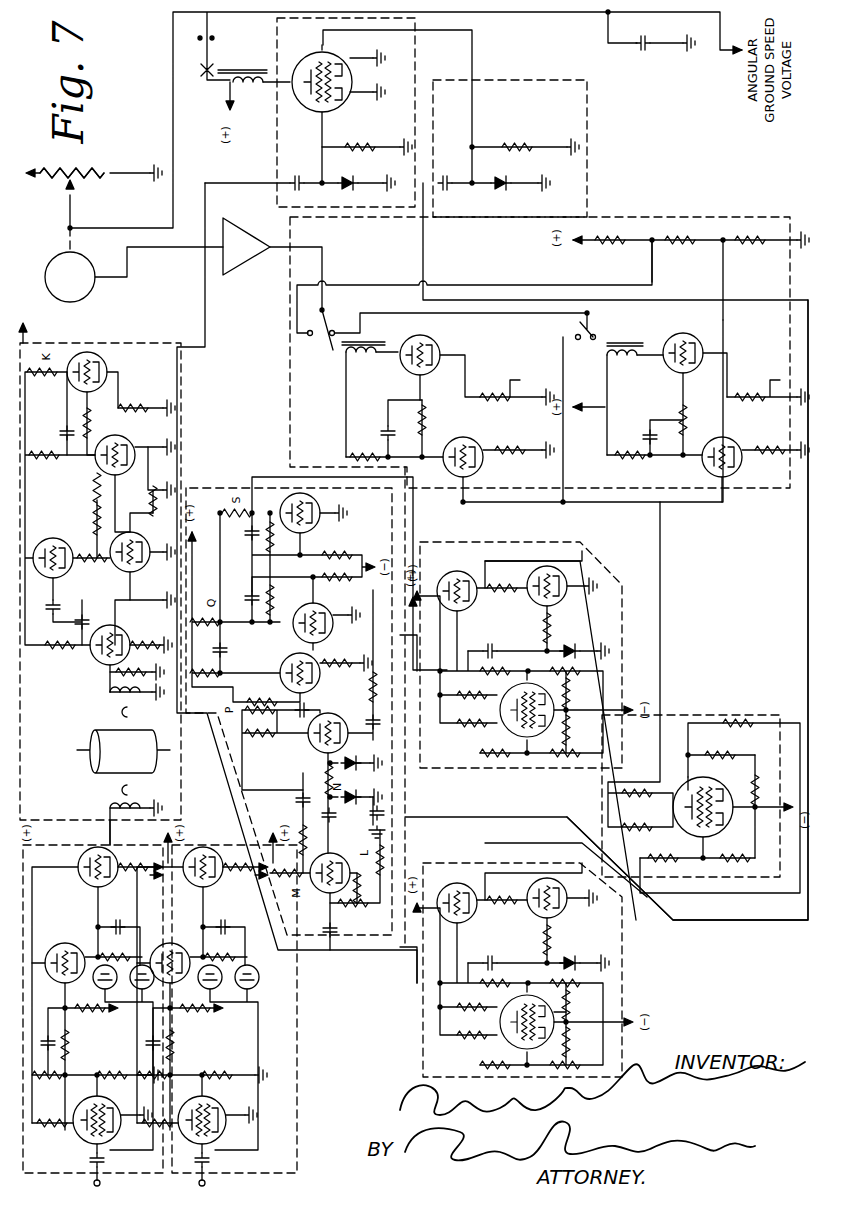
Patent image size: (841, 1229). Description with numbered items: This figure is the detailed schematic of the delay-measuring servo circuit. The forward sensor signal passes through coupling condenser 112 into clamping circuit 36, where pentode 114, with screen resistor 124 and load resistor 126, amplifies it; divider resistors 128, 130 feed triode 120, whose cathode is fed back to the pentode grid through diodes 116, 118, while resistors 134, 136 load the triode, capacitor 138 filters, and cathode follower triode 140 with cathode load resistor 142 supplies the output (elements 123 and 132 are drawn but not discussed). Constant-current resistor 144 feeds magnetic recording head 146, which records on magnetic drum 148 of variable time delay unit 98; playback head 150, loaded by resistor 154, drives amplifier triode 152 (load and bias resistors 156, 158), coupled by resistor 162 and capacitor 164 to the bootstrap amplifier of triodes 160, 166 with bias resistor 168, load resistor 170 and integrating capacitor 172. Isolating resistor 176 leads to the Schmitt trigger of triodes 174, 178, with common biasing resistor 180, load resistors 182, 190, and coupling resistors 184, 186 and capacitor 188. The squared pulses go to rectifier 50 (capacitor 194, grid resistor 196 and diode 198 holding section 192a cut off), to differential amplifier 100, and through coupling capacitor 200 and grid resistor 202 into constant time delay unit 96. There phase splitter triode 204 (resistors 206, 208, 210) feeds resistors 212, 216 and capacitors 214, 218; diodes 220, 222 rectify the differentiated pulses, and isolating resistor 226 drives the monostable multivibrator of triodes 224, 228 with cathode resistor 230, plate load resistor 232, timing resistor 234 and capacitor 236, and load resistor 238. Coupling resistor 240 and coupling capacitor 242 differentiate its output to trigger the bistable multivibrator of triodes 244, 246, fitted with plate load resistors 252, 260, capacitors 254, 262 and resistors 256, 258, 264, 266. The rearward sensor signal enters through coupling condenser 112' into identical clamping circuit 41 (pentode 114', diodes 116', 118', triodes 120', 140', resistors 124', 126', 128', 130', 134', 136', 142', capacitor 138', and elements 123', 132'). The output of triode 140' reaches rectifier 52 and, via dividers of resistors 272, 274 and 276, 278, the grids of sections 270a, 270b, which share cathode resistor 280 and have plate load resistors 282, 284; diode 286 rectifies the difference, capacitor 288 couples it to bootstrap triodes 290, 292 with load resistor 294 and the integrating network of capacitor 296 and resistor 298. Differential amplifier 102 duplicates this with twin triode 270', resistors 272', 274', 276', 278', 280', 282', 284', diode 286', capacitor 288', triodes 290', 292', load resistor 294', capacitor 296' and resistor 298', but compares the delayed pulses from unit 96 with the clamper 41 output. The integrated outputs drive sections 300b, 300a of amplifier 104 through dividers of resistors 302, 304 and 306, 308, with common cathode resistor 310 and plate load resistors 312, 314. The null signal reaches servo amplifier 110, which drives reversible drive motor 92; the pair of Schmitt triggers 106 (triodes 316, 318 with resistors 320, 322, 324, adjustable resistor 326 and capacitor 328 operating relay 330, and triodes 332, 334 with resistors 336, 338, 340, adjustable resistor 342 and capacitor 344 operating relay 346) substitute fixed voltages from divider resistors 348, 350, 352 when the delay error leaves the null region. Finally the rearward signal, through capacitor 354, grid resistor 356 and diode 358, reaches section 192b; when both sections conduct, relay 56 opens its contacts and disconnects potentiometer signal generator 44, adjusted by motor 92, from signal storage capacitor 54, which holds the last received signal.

The clamping circuit 36 is at (93, 999).
The clamping circuit 41 is at (206, 845).
The signal generator 44 is at (72, 187).
The rectifier 50 is at (277, 118).
The rectifier 52 is at (545, 80).
The signal storage capacitor 54 is at (645, 52).
The relay 56 is at (250, 88).
The reversible drive motor 92 is at (48, 283).
The constant time delay unit 96 is at (205, 488).
The variable time delay unit 98 is at (126, 343).
The differential amplifier 100 is at (625, 945).
The differential amplifier 102 is at (612, 620).
The amplifier 104 is at (690, 715).
The pair of Schmitt triggers 106 is at (688, 217).
The servo amplifier 110 is at (238, 268).
The coupling condenser 112 is at (121, 1137).
The pentode 114 is at (91, 1130).
The diode 116 is at (98, 981).
The diode 118 is at (143, 961).
The triode 120 is at (58, 947).
The resistor 123 is at (47, 1091).
The resistor 124 is at (129, 1065).
The resistor 126 is at (52, 1141).
The resistor 128 is at (73, 1047).
The resistor 130 is at (91, 1022).
The capacitor 132 is at (45, 1015).
The resistor 134 is at (104, 942).
The resistor 136 is at (127, 911).
The capacitor 138 is at (140, 882).
The triode 140 is at (89, 874).
The resistor 142 is at (155, 896).
The coupling condenser 112' is at (237, 1137).
The pentode 114' is at (202, 1130).
The diode 116' is at (215, 982).
The diode 118' is at (264, 960).
The triode 120' is at (164, 950).
The resistor 123' is at (165, 1091).
The resistor 124' is at (234, 1064).
The resistor 126' is at (165, 1142).
The resistor 128' is at (196, 1047).
The resistor 130' is at (206, 1023).
The capacitor 132' is at (167, 1014).
The resistor 134' is at (220, 941).
The resistor 136' is at (277, 971).
The capacitor 138' is at (245, 891).
The triode 140' is at (203, 879).
The resistor 142' is at (245, 850).
The resistor 144 is at (108, 822).
The magnetic recording head 146 is at (148, 803).
The magnetic drum 148 is at (90, 738).
The magnetic playback head 150 is at (110, 700).
The triode 152 is at (100, 655).
The resistor 154 is at (137, 665).
The resistor 156 is at (50, 650).
The resistor 158 is at (151, 631).
The triode 160 is at (119, 608).
The coupling resistor 162 is at (152, 589).
The coupling capacitor 164 is at (75, 622).
The triode 166 is at (48, 540).
The resistor 168 is at (142, 538).
The resistor 170 is at (92, 572).
The capacitor 172 is at (59, 601).
The triode 174 is at (96, 513).
The isolating resistor 176 is at (80, 515).
The triode 178 is at (89, 352).
The biasing resistor 180 is at (158, 481).
The resistor 182 is at (44, 462).
The resistor 184 is at (133, 405).
The resistor 186 is at (96, 423).
The capacitor 188 is at (60, 433).
The resistor 190 is at (62, 420).
The twin triode section 192a is at (310, 110).
The twin triode section 192b is at (304, 62).
The capacitor 194 is at (300, 178).
The grid resistor 196 is at (360, 145).
The semiconductor diode 198 is at (345, 180).
The coupling capacitor 200 is at (322, 930).
The grid resistor 202 is at (360, 888).
The triode 204 is at (333, 901).
The resistor 206 is at (359, 868).
The resistor 208 is at (291, 841).
The resistor 210 is at (388, 860).
The resistor 212 is at (296, 823).
The capacitor 214 is at (329, 749).
The resistor 216 is at (296, 850).
The capacitor 218 is at (336, 823).
The semiconductor diode 220 is at (353, 758).
The semiconductor diode 222 is at (370, 819).
The triode 224 is at (312, 740).
The isolating resistor 226 is at (319, 780).
The triode 228 is at (290, 667).
The cathode resistor 230 is at (347, 653).
The resistor 232 is at (252, 740).
The resistor 234 is at (281, 748).
The capacitor 236 is at (291, 715).
The load resistor 238 is at (205, 659).
The coupling resistor 240 is at (203, 615).
The coupling capacitor 242 is at (228, 652).
The triode 244 is at (318, 623).
The triode 246 is at (292, 500).
The plate load resistor 252 is at (239, 589).
The capacitor 254 is at (247, 581).
The resistor 256 is at (277, 600).
The resistor 258 is at (350, 585).
The plate load resistor 260 is at (228, 513).
The capacitor 262 is at (242, 537).
The resistor 264 is at (278, 539).
The resistor 266 is at (345, 553).
The twin triode section 270a is at (536, 1026).
The twin triode section 270b is at (563, 1003).
The twin triode 270' is at (543, 707).
The resistor 272 is at (495, 1055).
The resistor 274 is at (571, 1053).
The resistor 276 is at (495, 949).
The resistor 278 is at (549, 991).
The resistor 280 is at (579, 1024).
The resistor 282 is at (456, 1044).
The resistor 284 is at (457, 1001).
The semiconductor diode 286 is at (584, 944).
The capacitor 288 is at (482, 952).
The triode 290 is at (562, 908).
The triode 292 is at (451, 879).
The load resistor 294 is at (502, 889).
The capacitor 296 is at (537, 940).
The resistor 298 is at (568, 940).
The resistor 272' is at (495, 741).
The resistor 274' is at (565, 737).
The resistor 276' is at (466, 643).
The resistor 278' is at (539, 648).
The resistor 280' is at (579, 713).
The resistor 282' is at (458, 732).
The resistor 284' is at (456, 693).
The semiconductor diode 286' is at (584, 637).
The capacitor 288' is at (483, 639).
The triode 290' is at (562, 578).
The triode 292' is at (451, 558).
The load resistor 294' is at (502, 569).
The capacitor 296' is at (538, 629).
The resistor 298' is at (554, 643).
The twin triode section 300a is at (678, 825).
The twin triode section 300b is at (690, 777).
The resistor 302 is at (740, 760).
The resistor 304 is at (738, 718).
The resistor 306 is at (688, 920).
The resistor 308 is at (697, 846).
The resistor 310 is at (757, 789).
The resistor 312 is at (637, 840).
The resistor 314 is at (637, 806).
The triode 316 is at (571, 412).
The triode 318 is at (400, 358).
The resistor 320 is at (512, 454).
The resistor 322 is at (360, 455).
The resistor 324 is at (426, 435).
The resistor 326 is at (493, 390).
The capacitor 328 is at (380, 425).
The relay 330 is at (330, 350).
The triode 332 is at (712, 445).
The triode 334 is at (662, 360).
The resistor 336 is at (772, 445).
The resistor 338 is at (625, 452).
The resistor 340 is at (680, 425).
The resistor 342 is at (755, 390).
The capacitor 344 is at (645, 430).
The relay 346 is at (588, 345).
The resistor 348 is at (610, 254).
The resistor 350 is at (683, 245).
The resistor 352 is at (755, 245).
The capacitor 354 is at (447, 175).
The grid resistor 356 is at (515, 145).
The semiconductor diode 358 is at (505, 192).